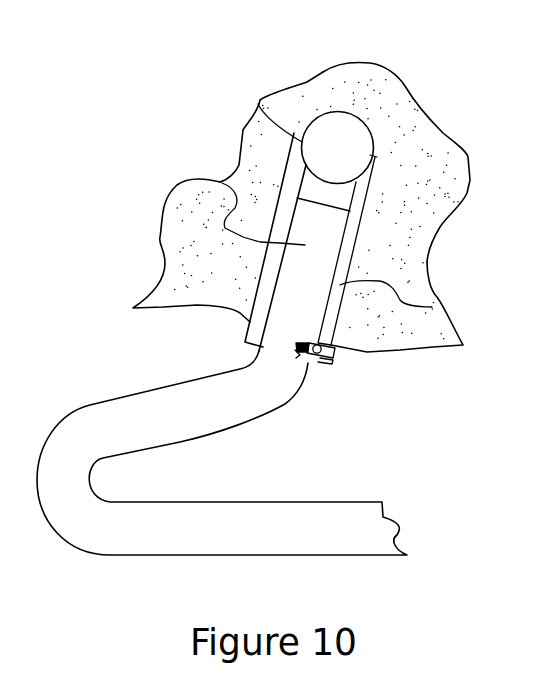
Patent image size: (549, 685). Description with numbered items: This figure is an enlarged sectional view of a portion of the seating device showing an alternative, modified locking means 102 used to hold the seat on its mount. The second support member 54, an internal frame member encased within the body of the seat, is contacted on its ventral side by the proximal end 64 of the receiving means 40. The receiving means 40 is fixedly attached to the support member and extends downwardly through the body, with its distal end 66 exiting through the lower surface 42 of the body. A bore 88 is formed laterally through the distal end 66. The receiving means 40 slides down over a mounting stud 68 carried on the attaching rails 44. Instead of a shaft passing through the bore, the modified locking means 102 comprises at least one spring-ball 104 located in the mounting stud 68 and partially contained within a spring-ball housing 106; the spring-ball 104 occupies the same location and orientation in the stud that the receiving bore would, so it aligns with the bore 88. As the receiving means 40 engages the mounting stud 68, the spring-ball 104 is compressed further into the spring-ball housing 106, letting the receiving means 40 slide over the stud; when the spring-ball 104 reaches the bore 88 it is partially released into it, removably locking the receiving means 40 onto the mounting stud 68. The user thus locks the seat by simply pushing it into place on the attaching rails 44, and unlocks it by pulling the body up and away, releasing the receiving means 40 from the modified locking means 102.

The receiving means 40 is at (432, 307).
The lower surface 42 is at (452, 343).
The attaching rails 44 is at (172, 551).
The second support member 54 is at (337, 147).
The proximal end 64 is at (260, 99).
The distal end 66 is at (247, 346).
The mounting stud 68 is at (220, 182).
The bore 88 is at (335, 357).
The modified locking means 102 is at (324, 362).
The spring-ball 104 is at (311, 358).
The spring-ball housing 106 is at (298, 347).